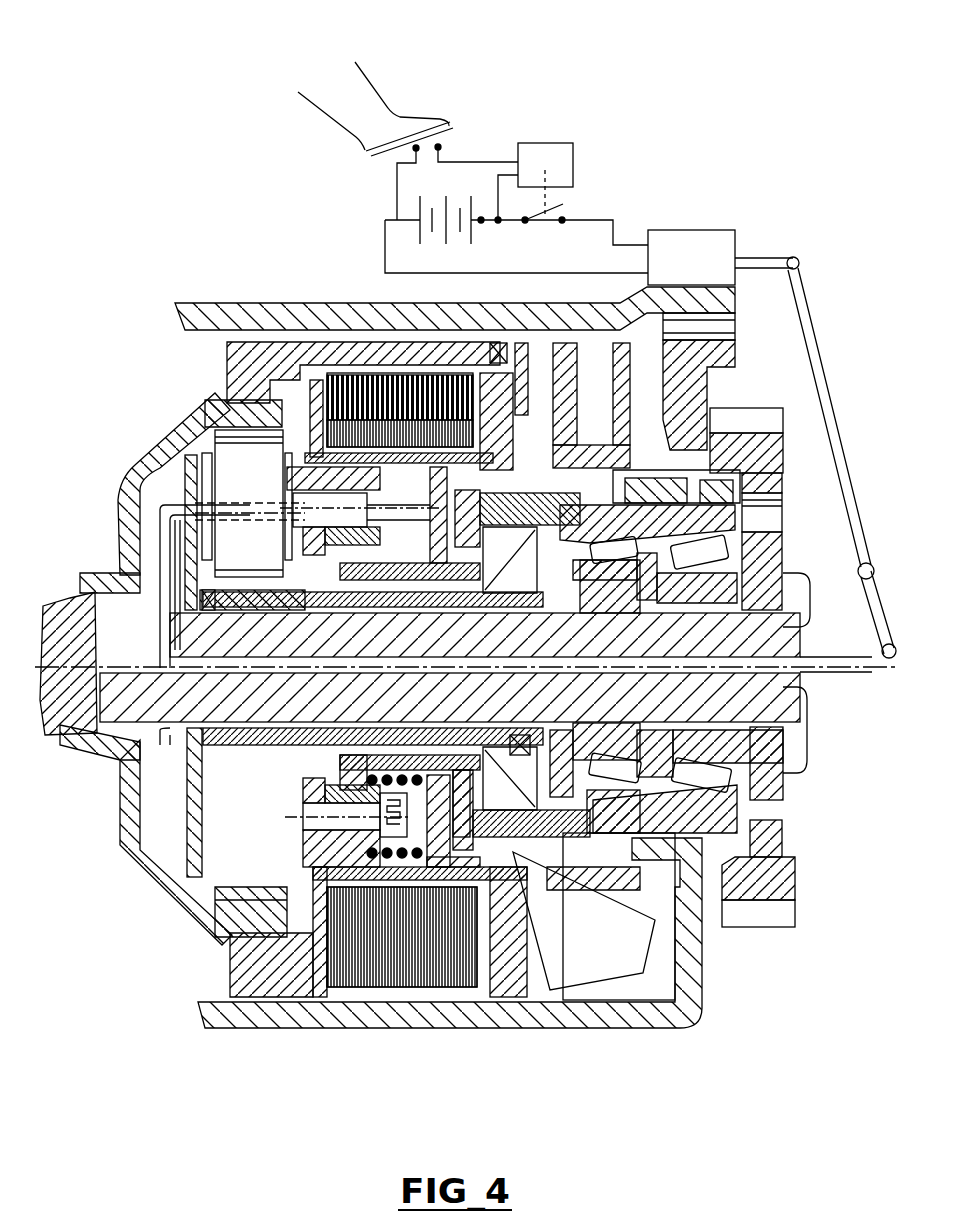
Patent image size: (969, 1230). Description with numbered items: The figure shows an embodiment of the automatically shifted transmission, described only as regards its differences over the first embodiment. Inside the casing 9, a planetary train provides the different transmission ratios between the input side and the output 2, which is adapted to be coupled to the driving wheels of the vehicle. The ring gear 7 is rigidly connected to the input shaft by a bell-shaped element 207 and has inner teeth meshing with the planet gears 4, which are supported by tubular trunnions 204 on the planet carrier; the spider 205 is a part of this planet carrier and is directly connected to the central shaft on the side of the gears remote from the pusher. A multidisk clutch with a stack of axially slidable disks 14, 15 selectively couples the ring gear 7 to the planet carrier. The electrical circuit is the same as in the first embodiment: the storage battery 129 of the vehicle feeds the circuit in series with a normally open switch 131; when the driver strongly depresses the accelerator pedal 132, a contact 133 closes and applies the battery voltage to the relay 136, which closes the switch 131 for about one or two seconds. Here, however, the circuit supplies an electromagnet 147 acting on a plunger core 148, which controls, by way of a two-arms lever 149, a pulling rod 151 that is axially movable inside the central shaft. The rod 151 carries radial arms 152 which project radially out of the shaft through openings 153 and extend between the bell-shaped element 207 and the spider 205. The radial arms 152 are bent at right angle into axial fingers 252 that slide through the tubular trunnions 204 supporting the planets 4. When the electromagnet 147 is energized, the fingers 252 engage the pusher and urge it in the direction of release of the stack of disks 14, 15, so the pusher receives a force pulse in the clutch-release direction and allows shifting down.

The output 2 is at (770, 882).
The planet gears 4 is at (237, 468).
The ring gear 7 is at (212, 395).
The casing 9 is at (250, 313).
The disks 14 is at (473, 997).
The disks 15 is at (322, 893).
The storage battery 129 is at (428, 250).
The switch 131 is at (547, 228).
The accelerator pedal 132 is at (455, 128).
The contact 133 is at (450, 147).
The relay 136 is at (572, 153).
The electromagnet 147 is at (698, 230).
The plunger core 148 is at (758, 256).
The two-arms lever 149 is at (825, 378).
The pulling rod 151 is at (846, 672).
The radial arms 152 is at (162, 545).
The openings 153 is at (88, 590).
The tubular trunnions 204 is at (302, 470).
The spider 205 is at (165, 468).
The bell-shaped element 207 is at (160, 440).
The axial fingers 252 is at (416, 498).